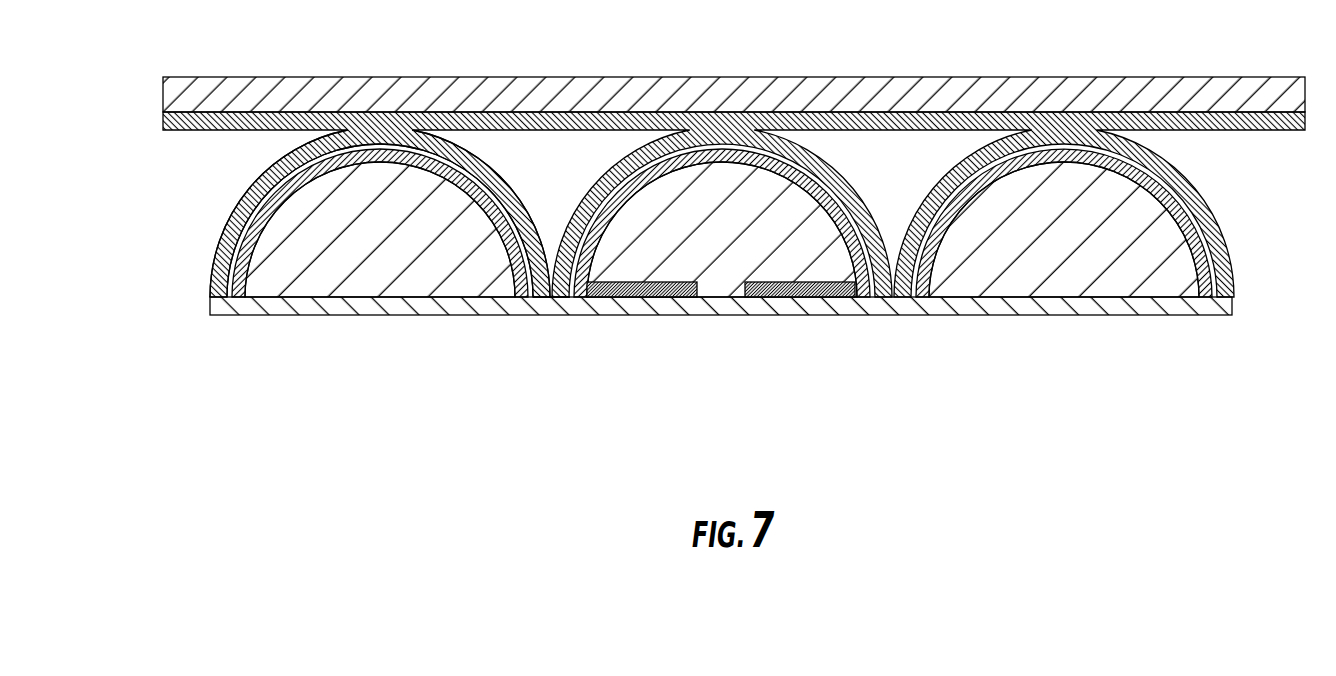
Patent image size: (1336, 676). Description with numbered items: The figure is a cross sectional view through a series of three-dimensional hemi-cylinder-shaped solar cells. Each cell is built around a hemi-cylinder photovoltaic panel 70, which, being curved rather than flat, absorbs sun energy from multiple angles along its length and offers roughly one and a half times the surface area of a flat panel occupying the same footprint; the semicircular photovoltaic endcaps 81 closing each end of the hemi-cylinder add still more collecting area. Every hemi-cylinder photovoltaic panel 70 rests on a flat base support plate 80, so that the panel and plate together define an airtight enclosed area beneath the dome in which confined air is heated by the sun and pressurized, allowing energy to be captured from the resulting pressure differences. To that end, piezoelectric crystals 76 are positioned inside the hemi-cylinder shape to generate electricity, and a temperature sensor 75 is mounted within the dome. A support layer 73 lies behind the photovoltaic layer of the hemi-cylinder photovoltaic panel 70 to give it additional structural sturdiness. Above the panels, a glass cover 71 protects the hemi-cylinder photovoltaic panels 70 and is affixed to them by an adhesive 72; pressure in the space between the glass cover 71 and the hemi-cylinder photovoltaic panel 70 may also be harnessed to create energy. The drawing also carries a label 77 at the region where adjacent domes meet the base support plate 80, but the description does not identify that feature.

The hemi-cylinder photovoltaic panel 70 is at (733, 204).
The glass cover 71 is at (775, 77).
The adhesive 72 is at (613, 120).
The support layer 73 is at (243, 273).
The temperature sensor 75 is at (632, 297).
The piezoelectric crystals 76 is at (822, 297).
The junction between adjacent domes 77 is at (553, 298).
The base support plate 80 is at (1007, 315).
The semicircular photovoltaic endcaps 81 is at (343, 277).